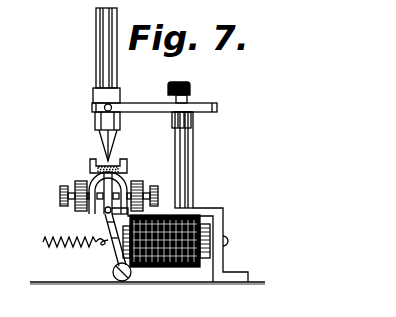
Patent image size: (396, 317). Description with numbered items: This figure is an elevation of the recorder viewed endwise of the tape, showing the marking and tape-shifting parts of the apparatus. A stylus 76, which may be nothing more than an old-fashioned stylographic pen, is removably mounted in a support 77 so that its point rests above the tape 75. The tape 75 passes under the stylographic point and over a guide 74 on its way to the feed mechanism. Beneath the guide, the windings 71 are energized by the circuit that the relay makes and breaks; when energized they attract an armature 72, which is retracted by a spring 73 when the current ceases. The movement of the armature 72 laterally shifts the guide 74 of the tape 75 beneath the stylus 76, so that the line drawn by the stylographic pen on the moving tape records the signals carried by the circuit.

The windings 71 is at (163, 263).
The armature 72 is at (106, 226).
The spring 73 is at (75, 255).
The guide 74 is at (90, 163).
The tape 75 is at (114, 165).
The stylus 76 is at (104, 141).
The support 77 is at (134, 110).